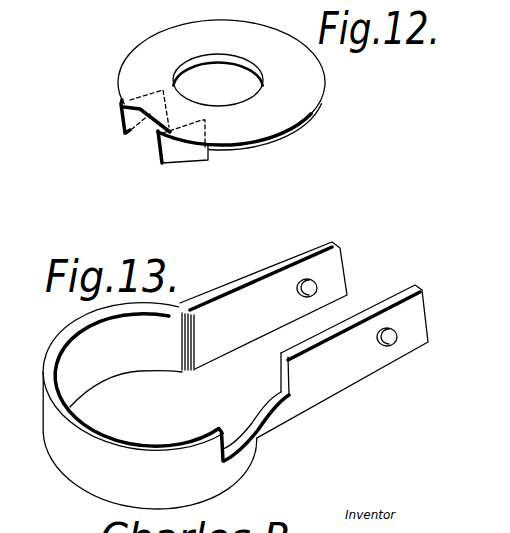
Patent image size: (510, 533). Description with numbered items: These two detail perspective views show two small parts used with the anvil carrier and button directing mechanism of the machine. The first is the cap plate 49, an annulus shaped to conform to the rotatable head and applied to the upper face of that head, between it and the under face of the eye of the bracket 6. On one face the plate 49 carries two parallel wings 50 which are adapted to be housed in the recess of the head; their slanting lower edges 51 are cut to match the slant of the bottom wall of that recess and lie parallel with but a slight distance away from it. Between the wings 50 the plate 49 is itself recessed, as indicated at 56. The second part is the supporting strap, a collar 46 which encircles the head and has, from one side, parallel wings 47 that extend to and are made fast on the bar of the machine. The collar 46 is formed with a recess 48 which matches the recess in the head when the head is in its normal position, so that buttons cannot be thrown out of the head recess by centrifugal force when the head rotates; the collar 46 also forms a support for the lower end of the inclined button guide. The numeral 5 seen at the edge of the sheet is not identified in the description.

In FIG. 12, the part 5 is at (76, 81).
In FIG. 12, the bracket 6 is at (5, 81).
In FIG. 13, the collar 46 is at (92, 477).
In FIG. 13, the parallel wings 47 is at (283, 270).
In FIG. 13, the recess 48 is at (247, 445).
In FIG. 12, the plate 49 is at (293, 96).
In FIG. 12, the parallel wings 50 is at (132, 130).
In FIG. 12, the slanting lower edges 51 is at (173, 163).
In FIG. 12, the recess 56 is at (163, 82).